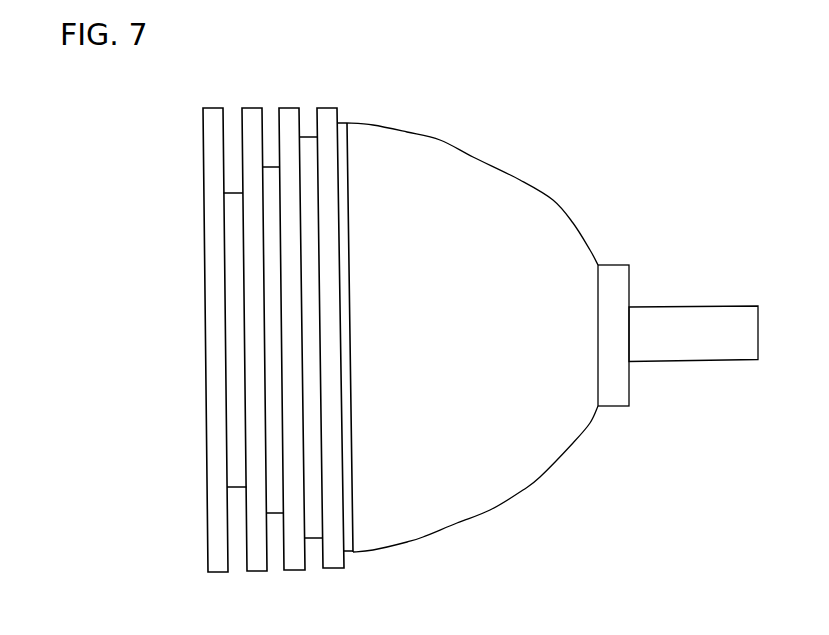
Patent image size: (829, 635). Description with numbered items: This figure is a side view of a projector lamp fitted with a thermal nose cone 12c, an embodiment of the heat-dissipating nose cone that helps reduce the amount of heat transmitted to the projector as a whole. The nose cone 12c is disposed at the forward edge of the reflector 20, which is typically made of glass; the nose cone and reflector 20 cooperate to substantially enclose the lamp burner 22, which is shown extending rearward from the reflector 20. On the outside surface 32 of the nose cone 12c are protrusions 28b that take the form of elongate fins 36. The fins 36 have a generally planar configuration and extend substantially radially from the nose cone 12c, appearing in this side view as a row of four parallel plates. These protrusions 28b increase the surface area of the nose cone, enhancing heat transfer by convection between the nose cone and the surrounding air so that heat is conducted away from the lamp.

The thermal nose cone 12c is at (185, 434).
The protrusions 28b is at (190, 155).
The elongate fins 36 is at (215, 117).
The outside surface 32 is at (233, 285).
The reflector 20 is at (428, 169).
The lamp burner 22 is at (678, 337).